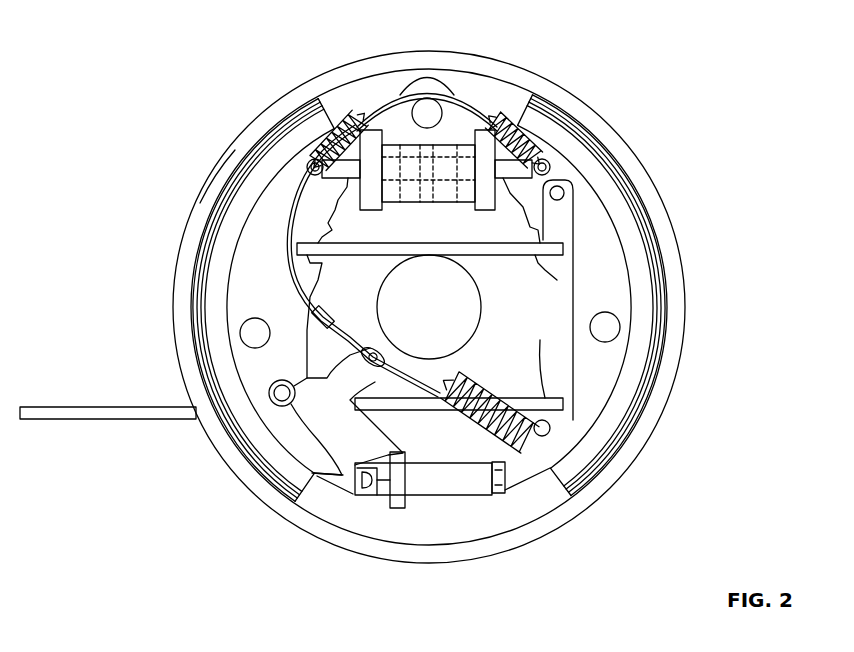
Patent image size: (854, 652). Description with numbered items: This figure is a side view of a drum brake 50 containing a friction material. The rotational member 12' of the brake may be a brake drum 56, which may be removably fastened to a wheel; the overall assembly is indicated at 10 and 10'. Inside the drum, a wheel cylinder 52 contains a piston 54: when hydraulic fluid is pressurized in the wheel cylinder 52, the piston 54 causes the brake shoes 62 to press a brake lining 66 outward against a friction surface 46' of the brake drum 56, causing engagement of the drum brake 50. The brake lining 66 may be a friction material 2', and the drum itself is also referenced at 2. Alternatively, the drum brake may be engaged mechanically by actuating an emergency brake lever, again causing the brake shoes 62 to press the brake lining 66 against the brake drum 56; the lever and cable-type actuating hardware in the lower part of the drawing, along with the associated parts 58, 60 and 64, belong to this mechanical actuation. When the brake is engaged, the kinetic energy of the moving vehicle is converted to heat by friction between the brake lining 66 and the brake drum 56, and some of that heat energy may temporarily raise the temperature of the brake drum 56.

The brake drum 2 is at (449, 307).
The friction material 2' is at (394, 307).
The drum brake assembly 10 is at (283, 297).
The drum brake assembly 10' is at (501, 267).
The rotational member 12' is at (148, 176).
The brake drum 56 is at (430, 249).
The friction surface 46' is at (434, 298).
The drum brake 50 is at (705, 56).
The wheel cylinder 52 is at (410, 145).
The piston 54 is at (453, 147).
The cable conduit 58 is at (100, 407).
The adjuster 60 is at (445, 485).
The brake shoes 62 is at (296, 440).
The strut plate 64 is at (562, 360).
The brake lining 66 is at (273, 155).